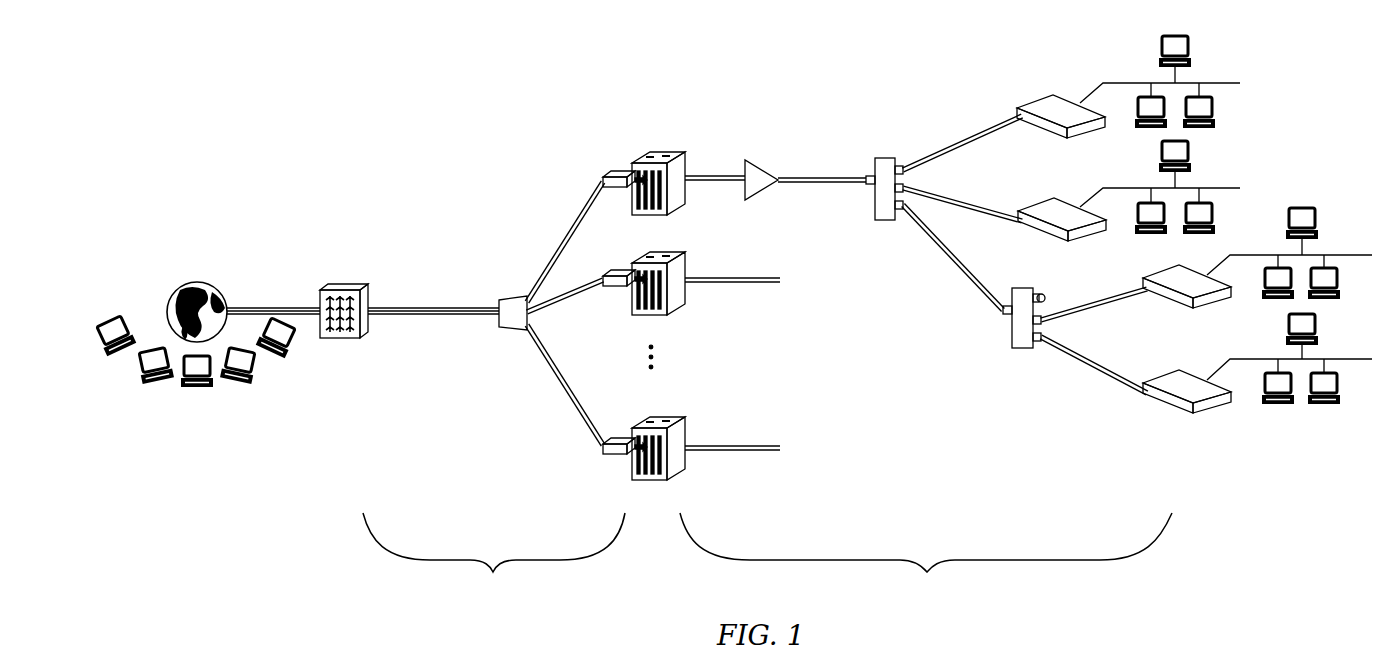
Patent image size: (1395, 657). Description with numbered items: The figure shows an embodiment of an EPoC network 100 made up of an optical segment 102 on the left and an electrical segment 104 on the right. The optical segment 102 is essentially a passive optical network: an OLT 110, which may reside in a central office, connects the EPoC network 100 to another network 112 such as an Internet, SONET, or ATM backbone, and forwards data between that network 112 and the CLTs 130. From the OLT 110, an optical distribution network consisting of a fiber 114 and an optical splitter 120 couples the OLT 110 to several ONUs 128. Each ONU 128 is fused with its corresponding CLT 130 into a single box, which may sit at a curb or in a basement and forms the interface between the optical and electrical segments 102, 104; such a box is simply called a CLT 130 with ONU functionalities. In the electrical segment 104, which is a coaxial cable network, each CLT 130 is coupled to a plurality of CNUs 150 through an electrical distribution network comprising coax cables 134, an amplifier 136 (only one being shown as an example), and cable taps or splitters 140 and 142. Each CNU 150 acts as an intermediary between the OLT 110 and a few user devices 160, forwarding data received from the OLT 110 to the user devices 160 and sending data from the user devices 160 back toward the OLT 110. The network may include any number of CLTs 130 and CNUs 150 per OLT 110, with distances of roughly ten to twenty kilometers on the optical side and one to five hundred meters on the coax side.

The EPoC network 100 is at (294, 66).
The optical segment 102 is at (494, 556).
The electrical segment 104 is at (926, 556).
The OLT 110 is at (357, 338).
The network 112 is at (208, 390).
The fiber 114 is at (392, 315).
The optical splitter 120 is at (508, 337).
The ONU 128 is at (623, 188).
The CLT 130 is at (673, 215).
The coax cable 134 is at (703, 175).
The amplifier 136 is at (762, 192).
The cable tap or splitter 140 is at (880, 221).
The cable tap or splitter 142 is at (1023, 350).
The CNU 150 is at (1070, 137).
The user devices 160 is at (1178, 34).